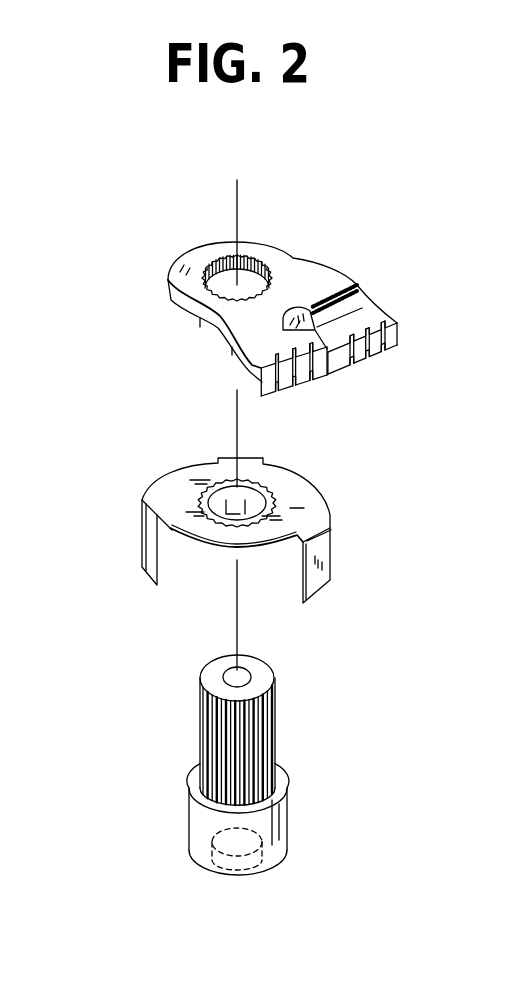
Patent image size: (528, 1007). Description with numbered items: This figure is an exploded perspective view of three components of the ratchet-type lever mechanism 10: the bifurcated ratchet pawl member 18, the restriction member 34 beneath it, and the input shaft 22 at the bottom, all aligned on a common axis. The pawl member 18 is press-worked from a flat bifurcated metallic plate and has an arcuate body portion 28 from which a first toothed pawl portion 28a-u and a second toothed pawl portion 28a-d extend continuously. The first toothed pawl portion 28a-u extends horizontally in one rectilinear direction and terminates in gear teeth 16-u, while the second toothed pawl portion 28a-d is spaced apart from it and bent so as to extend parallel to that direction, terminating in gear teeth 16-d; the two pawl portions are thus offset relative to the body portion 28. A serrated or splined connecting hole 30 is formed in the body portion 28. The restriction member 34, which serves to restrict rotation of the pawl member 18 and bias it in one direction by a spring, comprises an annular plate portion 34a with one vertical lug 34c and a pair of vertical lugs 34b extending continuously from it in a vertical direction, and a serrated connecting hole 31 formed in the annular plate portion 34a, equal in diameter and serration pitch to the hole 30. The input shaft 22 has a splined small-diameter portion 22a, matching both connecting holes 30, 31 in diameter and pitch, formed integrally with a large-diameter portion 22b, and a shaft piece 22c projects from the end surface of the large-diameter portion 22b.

The adjusting device 10 is at (405, 185).
The bifurcated ratchet pawl member 18 is at (303, 301).
The body portion 28 is at (303, 276).
The first toothed pawl portion 28a-u is at (257, 337).
The second toothed pawl portion 28a-d is at (355, 320).
The splined connecting hole 30 is at (269, 270).
The gear teeth 16-u is at (307, 383).
The gear teeth 16-d is at (388, 366).
The restriction member 34 is at (264, 526).
The annular plate portion 34a is at (211, 528).
The vertical lugs 34b is at (200, 493).
The vertical lug 34c is at (330, 567).
The serrated connecting hole 31 is at (273, 512).
The input shaft 22 is at (252, 784).
The splined small-diameter portion 22a is at (200, 733).
The large-diameter portion 22b is at (285, 810).
The shaft piece 22c is at (252, 858).